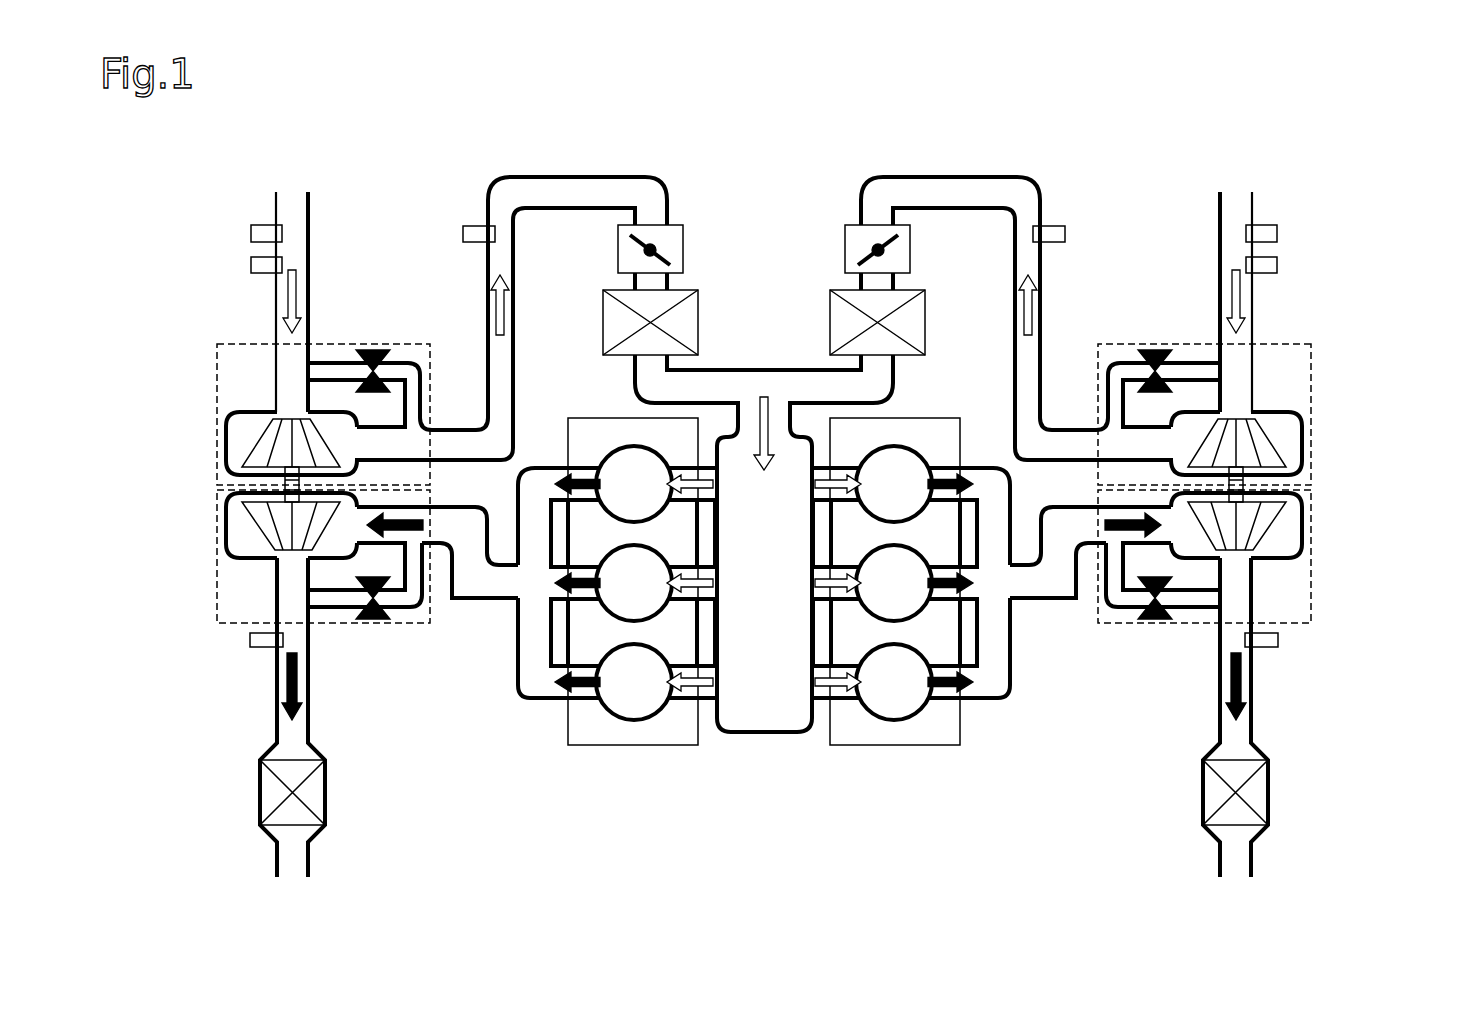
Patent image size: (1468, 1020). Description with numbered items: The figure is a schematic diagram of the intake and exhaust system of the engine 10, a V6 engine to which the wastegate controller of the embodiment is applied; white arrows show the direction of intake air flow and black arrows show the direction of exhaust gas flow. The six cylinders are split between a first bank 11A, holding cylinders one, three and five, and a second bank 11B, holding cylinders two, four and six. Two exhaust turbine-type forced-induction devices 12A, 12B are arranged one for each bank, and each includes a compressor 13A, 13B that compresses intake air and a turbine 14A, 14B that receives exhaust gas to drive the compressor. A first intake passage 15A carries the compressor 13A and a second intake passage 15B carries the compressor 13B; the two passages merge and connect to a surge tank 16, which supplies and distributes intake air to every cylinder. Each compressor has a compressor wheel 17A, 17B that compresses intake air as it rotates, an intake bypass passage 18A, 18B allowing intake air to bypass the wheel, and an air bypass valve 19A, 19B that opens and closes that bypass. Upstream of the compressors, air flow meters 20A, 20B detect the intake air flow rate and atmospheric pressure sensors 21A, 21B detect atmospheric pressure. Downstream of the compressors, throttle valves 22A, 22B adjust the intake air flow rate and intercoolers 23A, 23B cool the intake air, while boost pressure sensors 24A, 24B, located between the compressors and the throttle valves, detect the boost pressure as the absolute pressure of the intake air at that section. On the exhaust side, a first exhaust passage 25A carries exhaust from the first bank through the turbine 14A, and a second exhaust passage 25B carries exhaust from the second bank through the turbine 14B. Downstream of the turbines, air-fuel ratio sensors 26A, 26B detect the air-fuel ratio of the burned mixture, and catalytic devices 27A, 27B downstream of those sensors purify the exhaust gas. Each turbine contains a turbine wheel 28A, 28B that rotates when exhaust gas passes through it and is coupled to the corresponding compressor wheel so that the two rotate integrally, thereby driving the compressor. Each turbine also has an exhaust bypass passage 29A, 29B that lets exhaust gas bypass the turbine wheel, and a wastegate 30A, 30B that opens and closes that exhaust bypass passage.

The engine 10 is at (388, 173).
The first bank 11A is at (893, 746).
The second bank 11B is at (635, 746).
The exhaust turbine-type forced-induction device 12A is at (1237, 483).
The exhaust turbine-type forced-induction device 12B is at (295, 483).
The compressor 13A is at (1204, 414).
The compressor 13B is at (329, 414).
The turbine 14A is at (1246, 556).
The turbine 14B is at (287, 556).
The first intake passage 15A is at (1042, 305).
The second intake passage 15B is at (486, 305).
The surge tank 16 is at (761, 733).
The compressor wheel 17A is at (1260, 430).
The compressor wheel 17B is at (268, 430).
The intake bypass passage 18A is at (1130, 363).
The intake bypass passage 18B is at (398, 363).
The air bypass valve 19A is at (1155, 349).
The air bypass valve 19B is at (373, 349).
The air flow meter 20A is at (1280, 235).
The air flow meter 20B is at (250, 235).
The atmospheric pressure sensor 21A is at (1280, 265).
The atmospheric pressure sensor 21B is at (250, 265).
The throttle valve 22A is at (910, 260).
The throttle valve 22B is at (618, 249).
The intercooler 23A is at (829, 329).
The intercooler 23B is at (699, 304).
The boost pressure sensor 24A is at (1066, 235).
The boost pressure sensor 24B is at (462, 235).
The first exhaust passage 25A is at (1219, 681).
The second exhaust passage 25B is at (311, 681).
The air-fuel ratio sensor 26A is at (1280, 639).
The air-fuel ratio sensor 26B is at (249, 639).
The catalytic device 27A is at (1269, 797).
The catalytic device 27B is at (259, 797).
The turbine wheel 28A is at (1248, 540).
The turbine wheel 28B is at (280, 540).
The exhaust bypass passage 29A is at (1103, 605).
The exhaust bypass passage 29B is at (425, 605).
The wastegate 30A is at (1155, 622).
The wastegate 30B is at (376, 622).